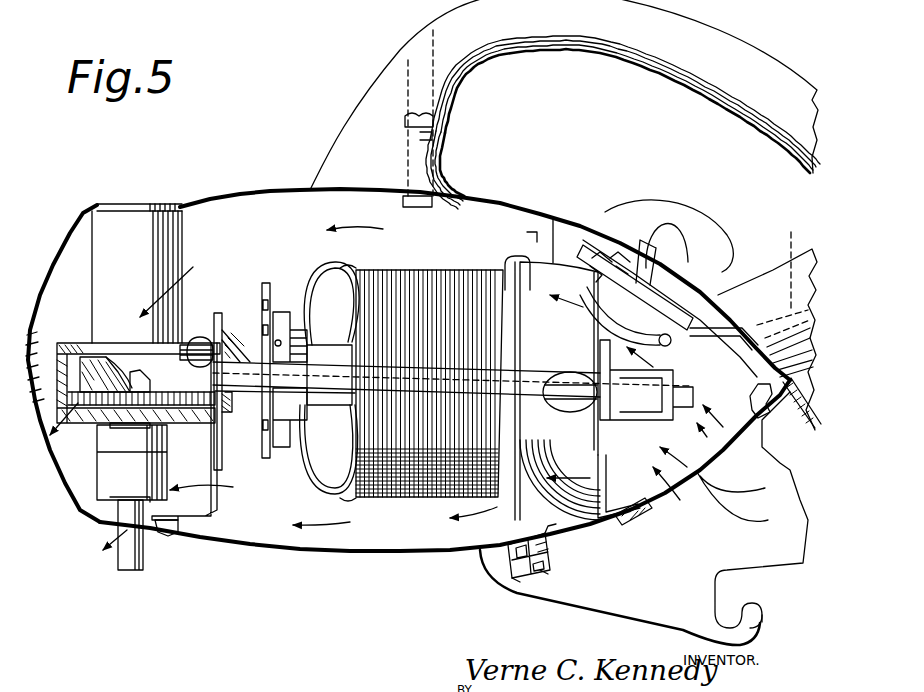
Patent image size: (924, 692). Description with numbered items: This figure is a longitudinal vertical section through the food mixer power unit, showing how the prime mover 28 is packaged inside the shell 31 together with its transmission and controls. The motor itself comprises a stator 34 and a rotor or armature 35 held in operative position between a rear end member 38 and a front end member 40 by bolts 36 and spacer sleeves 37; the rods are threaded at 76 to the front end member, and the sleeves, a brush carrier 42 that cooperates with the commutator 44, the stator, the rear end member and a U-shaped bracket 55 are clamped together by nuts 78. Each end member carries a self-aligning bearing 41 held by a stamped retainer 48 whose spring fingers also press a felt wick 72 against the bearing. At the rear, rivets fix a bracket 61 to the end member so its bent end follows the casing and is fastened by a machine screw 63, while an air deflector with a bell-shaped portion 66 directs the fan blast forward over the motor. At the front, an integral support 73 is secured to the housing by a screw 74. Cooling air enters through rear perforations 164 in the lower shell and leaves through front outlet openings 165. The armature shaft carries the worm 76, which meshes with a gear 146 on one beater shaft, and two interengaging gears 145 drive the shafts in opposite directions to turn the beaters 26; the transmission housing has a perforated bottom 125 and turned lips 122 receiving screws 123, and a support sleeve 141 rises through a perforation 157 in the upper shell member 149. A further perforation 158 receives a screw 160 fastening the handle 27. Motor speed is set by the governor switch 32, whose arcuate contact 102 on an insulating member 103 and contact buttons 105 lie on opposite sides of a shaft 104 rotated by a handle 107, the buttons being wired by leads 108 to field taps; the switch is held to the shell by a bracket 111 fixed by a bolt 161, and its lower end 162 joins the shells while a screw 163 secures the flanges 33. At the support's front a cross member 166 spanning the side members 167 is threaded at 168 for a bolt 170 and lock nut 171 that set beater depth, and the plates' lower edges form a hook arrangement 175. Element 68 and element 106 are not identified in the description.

The beaters 26 is at (145, 568).
The handle 27 is at (735, 57).
The prime mover 28 is at (398, 500).
The shell 31 is at (716, 290).
The governor switch 32 is at (700, 206).
The flanges 33 is at (637, 592).
The stator 34 is at (415, 270).
The rotor or armature 35 is at (293, 468).
The bolts 36 is at (313, 368).
The spacer sleeves 37 is at (328, 342).
The rear end member 38 is at (596, 358).
The front end member 40 is at (224, 330).
The bearing 41 is at (232, 413).
The brush carrier 42 is at (264, 282).
The commutator 44 is at (298, 312).
The retainer 48 is at (224, 330).
The U-shaped bracket 55 is at (650, 418).
The bracket 61 is at (607, 480).
The machine screw 63 is at (642, 516).
The bell-shaped portion 66 is at (527, 256).
The terminal 68 is at (530, 229).
The felt wick 72 is at (228, 436).
The support 73 is at (213, 492).
The screw 74 is at (172, 535).
The worm 76 is at (135, 358).
The nuts 78 is at (612, 385).
The arcuate contact 102 is at (595, 266).
The insulating member 103 is at (600, 252).
The shaft 104 is at (640, 240).
The contact buttons 105 is at (727, 252).
The switch terminal 106 is at (618, 252).
The handle 107 is at (674, 206).
The leads 108 is at (672, 344).
The bracket 111 is at (725, 336).
The lips 122 is at (195, 340).
The screws 123 is at (210, 342).
The bottom 125 is at (55, 437).
The support sleeve 141 is at (183, 232).
The gears 145 is at (92, 412).
The gear 146 is at (72, 343).
The upper shell member 149 is at (220, 196).
The perforation 157 is at (172, 203).
The perforation 158 is at (445, 175).
The screw 160 is at (450, 133).
The bolt 161 is at (791, 232).
The lower end 162 is at (753, 414).
The screw 163 is at (767, 386).
The perforations 164 is at (720, 455).
The outlet openings 165 is at (98, 526).
The cross member 166 is at (510, 560).
The side members 167 is at (773, 564).
The threaded portion 168 is at (548, 545).
The bolt 170 is at (515, 578).
The lock nut 171 is at (515, 568).
The hook arrangement 175 is at (755, 624).